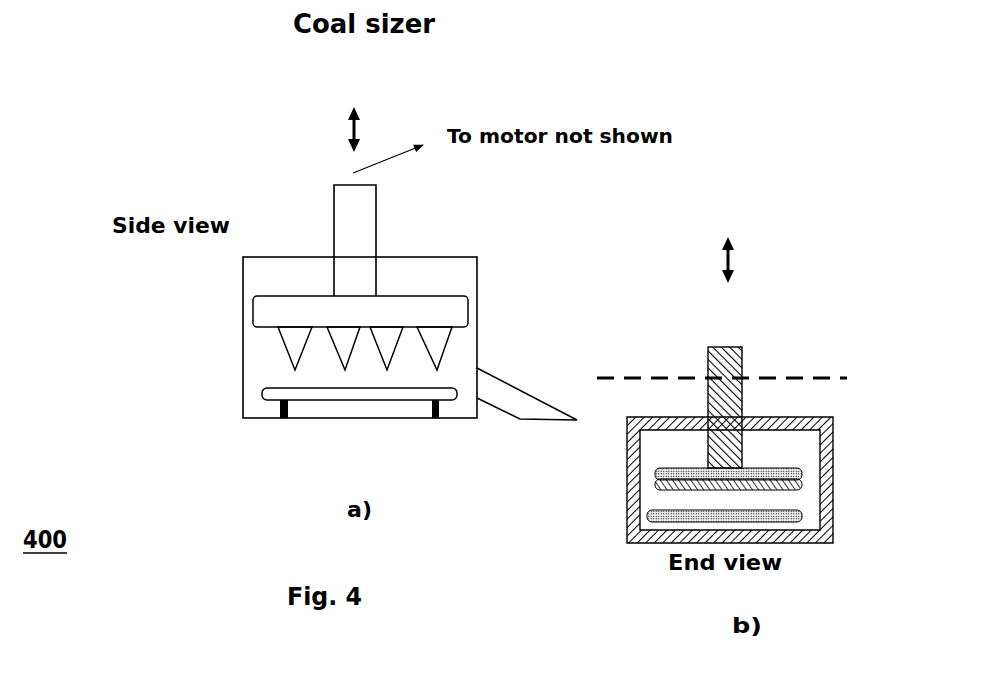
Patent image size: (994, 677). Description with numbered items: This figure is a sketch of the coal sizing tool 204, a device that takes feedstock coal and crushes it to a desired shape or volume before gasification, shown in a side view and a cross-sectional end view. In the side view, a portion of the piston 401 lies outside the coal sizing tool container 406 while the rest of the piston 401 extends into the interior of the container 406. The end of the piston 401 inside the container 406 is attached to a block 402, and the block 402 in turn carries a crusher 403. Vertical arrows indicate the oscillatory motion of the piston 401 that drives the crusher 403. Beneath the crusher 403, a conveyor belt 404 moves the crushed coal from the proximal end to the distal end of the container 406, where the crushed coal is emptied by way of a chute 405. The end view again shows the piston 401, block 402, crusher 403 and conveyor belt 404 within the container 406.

The coal sizing tool 204 is at (497, 242).
The piston 401 is at (325, 237).
The block 402 is at (468, 307).
The crusher 403 is at (283, 348).
The conveyor belt 404 is at (318, 422).
The chute 405 is at (518, 427).
The coal sizing tool container 406 is at (233, 297).